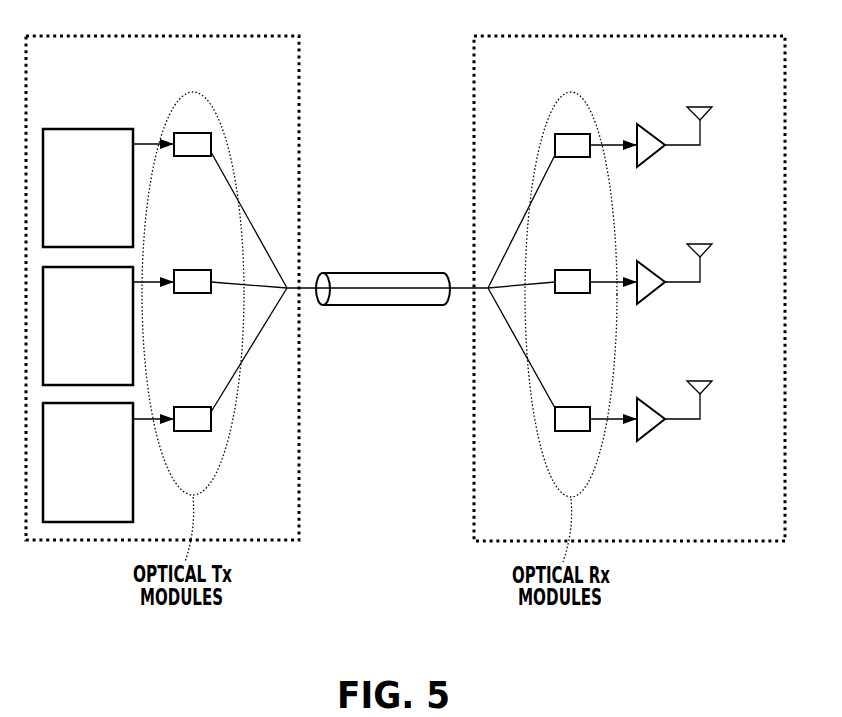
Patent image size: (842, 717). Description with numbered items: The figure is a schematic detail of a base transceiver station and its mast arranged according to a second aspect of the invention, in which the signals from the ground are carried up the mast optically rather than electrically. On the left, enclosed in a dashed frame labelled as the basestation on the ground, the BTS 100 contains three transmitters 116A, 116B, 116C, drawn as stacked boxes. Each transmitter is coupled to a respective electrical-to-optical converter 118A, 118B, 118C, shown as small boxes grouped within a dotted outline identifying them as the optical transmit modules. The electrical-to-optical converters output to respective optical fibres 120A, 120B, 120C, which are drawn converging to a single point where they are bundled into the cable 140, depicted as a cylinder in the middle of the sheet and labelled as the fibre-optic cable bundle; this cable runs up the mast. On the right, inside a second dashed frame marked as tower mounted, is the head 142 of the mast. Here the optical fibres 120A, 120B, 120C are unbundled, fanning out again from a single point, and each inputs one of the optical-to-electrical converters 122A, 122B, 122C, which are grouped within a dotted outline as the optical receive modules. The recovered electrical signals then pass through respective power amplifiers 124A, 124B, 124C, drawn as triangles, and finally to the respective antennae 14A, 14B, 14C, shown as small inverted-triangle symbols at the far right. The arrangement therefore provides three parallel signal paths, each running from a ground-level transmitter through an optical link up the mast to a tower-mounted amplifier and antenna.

The BTS 100 is at (177, 84).
The head of the mast 142 is at (645, 84).
The transmitter 116A is at (110, 211).
The transmitter 116B is at (110, 347).
The transmitter 116C is at (110, 485).
The electrical-to-optical converter 118A is at (193, 157).
The electrical-to-optical converter 118B is at (195, 269).
The electrical-to-optical converter 118C is at (195, 406).
The optical fibre 120A is at (267, 207).
The optical fibre 120B is at (237, 285).
The optical fibre 120C is at (252, 345).
The cable 140 is at (392, 273).
The optical-to-electrical converter 122A is at (568, 158).
The optical-to-electrical converter 122B is at (567, 269).
The optical-to-electrical converter 122C is at (567, 406).
The power amplifier 124A is at (657, 162).
The power amplifier 124B is at (657, 299).
The power amplifier 124C is at (657, 436).
The antenna 14A is at (701, 124).
The antenna 14B is at (701, 261).
The antenna 14C is at (701, 398).